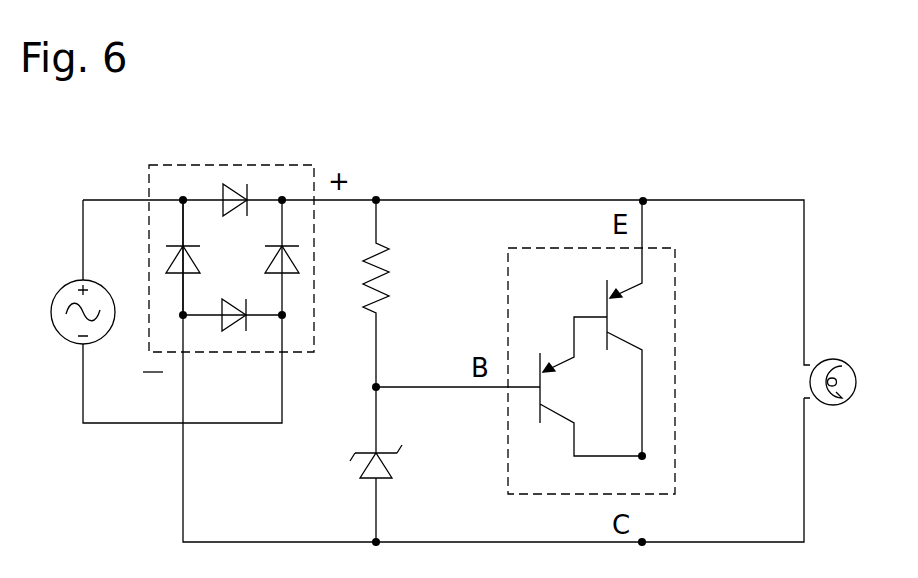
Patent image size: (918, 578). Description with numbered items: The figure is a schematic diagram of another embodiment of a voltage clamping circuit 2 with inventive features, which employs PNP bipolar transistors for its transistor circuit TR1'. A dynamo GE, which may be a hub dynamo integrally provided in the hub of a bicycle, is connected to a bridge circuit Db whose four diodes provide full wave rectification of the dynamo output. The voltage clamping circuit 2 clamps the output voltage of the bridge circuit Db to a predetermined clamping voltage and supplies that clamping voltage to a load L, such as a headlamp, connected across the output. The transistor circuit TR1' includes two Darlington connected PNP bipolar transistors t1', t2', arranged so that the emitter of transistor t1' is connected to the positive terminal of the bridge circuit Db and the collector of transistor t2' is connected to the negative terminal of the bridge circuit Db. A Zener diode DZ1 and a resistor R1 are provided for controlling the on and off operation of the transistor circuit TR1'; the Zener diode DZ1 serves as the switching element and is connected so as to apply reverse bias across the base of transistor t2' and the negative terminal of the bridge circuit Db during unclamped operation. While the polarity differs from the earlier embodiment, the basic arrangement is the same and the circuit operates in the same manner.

The voltage clamping circuit 2 is at (558, 162).
The dynamo GE is at (66, 333).
The bridge circuit Db is at (231, 238).
The resistor R1 is at (404, 293).
The Zener diode DZ1 is at (407, 464).
The transistor circuit TR1' is at (591, 371).
The transistor t1' is at (607, 328).
The transistor t2' is at (591, 386).
The load L is at (841, 398).